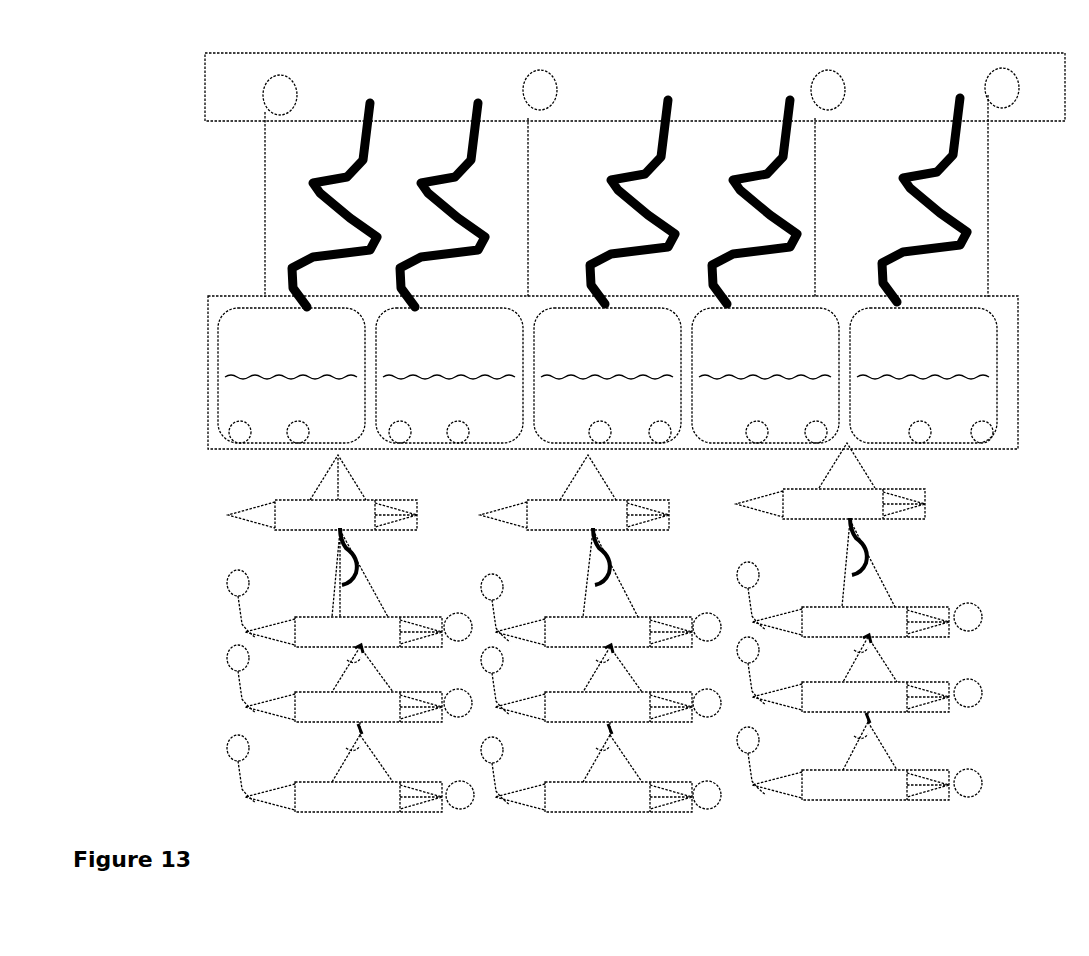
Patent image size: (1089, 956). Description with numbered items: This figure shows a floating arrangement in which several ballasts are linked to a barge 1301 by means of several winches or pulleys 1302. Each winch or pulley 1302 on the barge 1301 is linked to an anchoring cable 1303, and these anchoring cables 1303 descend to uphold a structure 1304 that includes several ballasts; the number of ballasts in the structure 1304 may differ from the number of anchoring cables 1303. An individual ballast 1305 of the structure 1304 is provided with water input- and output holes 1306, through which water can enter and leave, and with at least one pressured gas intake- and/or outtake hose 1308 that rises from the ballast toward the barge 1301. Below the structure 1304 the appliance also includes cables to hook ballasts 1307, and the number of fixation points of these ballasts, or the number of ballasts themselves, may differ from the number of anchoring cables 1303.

The barge 1301 is at (200, 86).
The winches (or pulleys) 1302 is at (548, 78).
The anchoring cables 1303 is at (262, 170).
The structure 1304 is at (208, 310).
The container 1305 is at (220, 353).
The water input- and output holes 1306 is at (240, 432).
The cables to hook ballasts 1307 is at (246, 632).
The pressured gas intake- and/or outtake hose 1308 is at (936, 162).